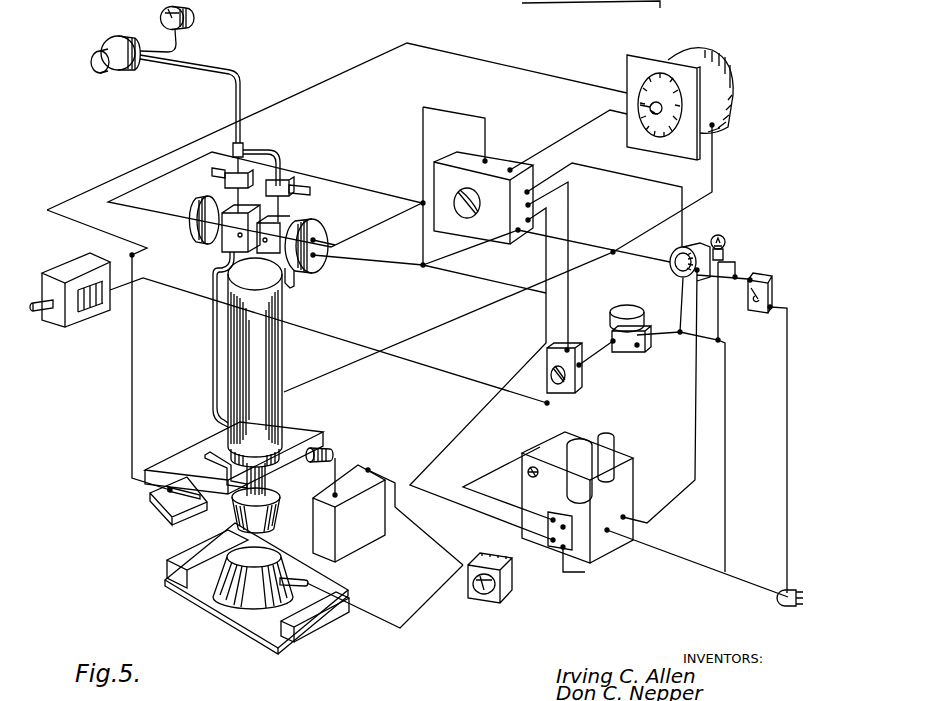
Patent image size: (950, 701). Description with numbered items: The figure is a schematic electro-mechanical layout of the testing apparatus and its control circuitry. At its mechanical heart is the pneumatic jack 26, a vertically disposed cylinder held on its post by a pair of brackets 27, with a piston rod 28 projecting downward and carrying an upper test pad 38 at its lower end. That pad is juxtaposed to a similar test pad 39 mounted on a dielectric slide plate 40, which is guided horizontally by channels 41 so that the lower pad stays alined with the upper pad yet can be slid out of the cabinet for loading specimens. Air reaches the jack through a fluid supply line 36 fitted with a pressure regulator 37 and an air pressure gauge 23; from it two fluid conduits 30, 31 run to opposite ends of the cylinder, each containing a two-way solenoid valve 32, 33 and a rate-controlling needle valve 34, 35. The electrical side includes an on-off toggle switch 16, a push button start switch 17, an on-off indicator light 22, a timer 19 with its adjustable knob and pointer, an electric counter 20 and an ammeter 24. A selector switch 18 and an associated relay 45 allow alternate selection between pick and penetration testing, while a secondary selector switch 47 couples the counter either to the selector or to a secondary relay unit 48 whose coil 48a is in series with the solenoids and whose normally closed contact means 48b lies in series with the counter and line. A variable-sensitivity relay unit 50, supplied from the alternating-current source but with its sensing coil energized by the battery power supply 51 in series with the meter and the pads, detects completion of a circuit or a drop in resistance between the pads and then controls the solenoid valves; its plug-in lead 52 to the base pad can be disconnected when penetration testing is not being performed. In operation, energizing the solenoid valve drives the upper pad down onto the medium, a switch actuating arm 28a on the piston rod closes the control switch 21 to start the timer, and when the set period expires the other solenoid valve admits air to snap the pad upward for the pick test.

The on-off toggle switch 16 is at (773, 273).
The push button start switch 17 is at (652, 265).
The selector switch 18 is at (453, 213).
The timer 19 is at (720, 97).
The electric counter 20 is at (75, 323).
The control switch 21 is at (170, 505).
The on-off indicator light 22 is at (726, 238).
The air pressure gauge 23 is at (192, 17).
The ammeter 24 is at (492, 603).
The pneumatic jack 26 is at (235, 357).
The brackets 27 is at (303, 430).
The piston rod 28 is at (265, 477).
The switch actuating arm 28a is at (210, 465).
The fluid conduit 30 is at (294, 293).
The fluid conduit 31 is at (213, 335).
The two-way solenoid valve 32 is at (317, 263).
The two-way solenoid valve 33 is at (217, 247).
The needle valve 34 is at (290, 180).
The needle valve 35 is at (205, 175).
The fluid supply line 36 is at (212, 72).
The pressure regulator 37 is at (113, 72).
The test pad 38 is at (273, 520).
The test pad 39 is at (245, 588).
The dielectric slide plate 40 is at (255, 631).
The channels 41 is at (185, 555).
The relay 45 is at (498, 167).
The secondary selector switch 47 is at (547, 373).
The secondary relay unit 48 is at (626, 335).
The coil 48a is at (622, 305).
The normally closed contact means 48b is at (617, 352).
The relay unit 50 is at (604, 428).
The battery power supply 51 is at (357, 465).
The plug-in lead 52 is at (256, 595).